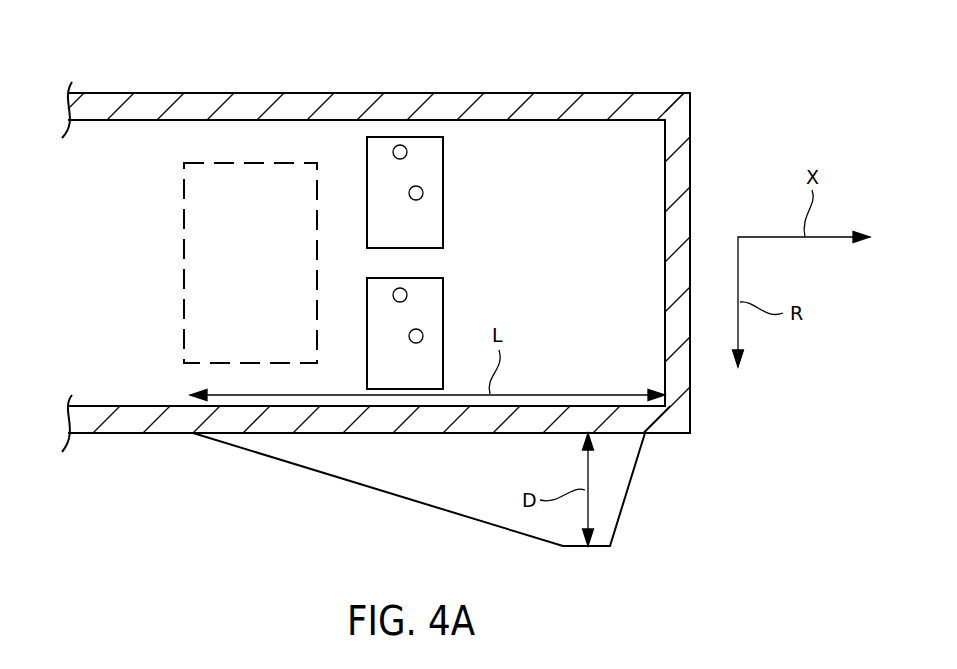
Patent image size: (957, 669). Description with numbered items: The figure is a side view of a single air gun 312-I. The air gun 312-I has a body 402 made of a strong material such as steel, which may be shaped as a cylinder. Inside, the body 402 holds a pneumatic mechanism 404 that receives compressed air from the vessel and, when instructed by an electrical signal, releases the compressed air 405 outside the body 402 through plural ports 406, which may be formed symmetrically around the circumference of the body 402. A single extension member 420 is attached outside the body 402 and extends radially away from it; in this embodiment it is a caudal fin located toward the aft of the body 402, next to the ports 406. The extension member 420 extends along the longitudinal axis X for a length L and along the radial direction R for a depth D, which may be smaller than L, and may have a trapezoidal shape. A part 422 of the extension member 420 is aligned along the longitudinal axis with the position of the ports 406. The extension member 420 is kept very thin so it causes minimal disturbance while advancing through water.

The air gun 312-I is at (600, 75).
The body 402 is at (355, 107).
The pneumatic mechanism 404 is at (250, 162).
The compressed air 405 is at (416, 185).
The ports 406 is at (395, 343).
The extension member 420 is at (608, 487).
The part of the extension member 422 is at (392, 468).